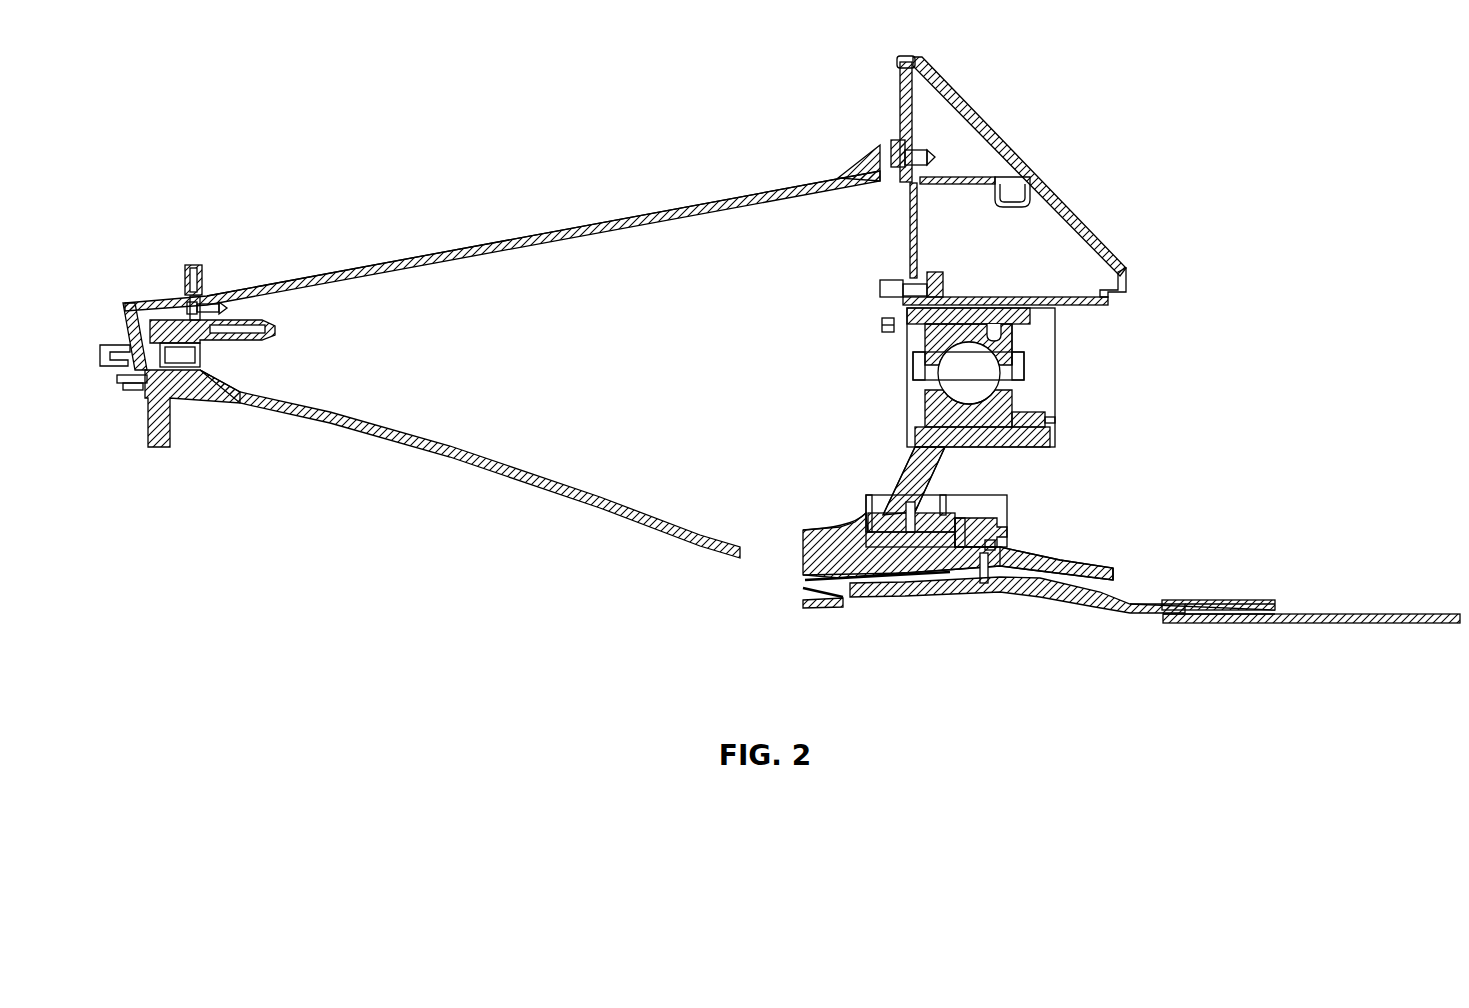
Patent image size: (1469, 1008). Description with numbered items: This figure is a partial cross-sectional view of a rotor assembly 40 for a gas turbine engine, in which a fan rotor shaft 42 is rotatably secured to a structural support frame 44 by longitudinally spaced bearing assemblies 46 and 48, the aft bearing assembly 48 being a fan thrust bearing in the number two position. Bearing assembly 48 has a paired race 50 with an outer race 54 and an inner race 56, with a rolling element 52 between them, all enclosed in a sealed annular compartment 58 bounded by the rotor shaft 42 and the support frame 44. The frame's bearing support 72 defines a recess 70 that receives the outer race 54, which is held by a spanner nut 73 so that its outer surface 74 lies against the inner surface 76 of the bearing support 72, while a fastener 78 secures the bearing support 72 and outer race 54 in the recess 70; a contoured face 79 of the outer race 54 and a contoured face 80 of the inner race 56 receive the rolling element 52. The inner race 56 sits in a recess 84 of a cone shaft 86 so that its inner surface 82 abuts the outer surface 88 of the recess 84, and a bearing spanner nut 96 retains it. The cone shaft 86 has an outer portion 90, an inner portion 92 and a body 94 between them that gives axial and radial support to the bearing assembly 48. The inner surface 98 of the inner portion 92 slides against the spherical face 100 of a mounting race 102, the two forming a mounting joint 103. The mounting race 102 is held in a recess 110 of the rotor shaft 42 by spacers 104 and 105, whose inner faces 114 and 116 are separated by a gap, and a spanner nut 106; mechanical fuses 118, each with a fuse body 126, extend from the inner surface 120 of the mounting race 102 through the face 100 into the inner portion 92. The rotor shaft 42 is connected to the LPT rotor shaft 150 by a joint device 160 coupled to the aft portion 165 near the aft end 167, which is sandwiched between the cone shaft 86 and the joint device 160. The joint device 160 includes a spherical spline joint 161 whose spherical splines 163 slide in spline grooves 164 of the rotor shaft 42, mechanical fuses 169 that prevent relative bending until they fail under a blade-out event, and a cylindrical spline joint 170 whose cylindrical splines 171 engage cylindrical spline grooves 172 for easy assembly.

The rotor assembly 40 is at (415, 148).
The rotor shaft 42 is at (480, 465).
The structural support frame 44 is at (953, 187).
The bearing assembly 46 is at (163, 262).
The bearing assembly 48 is at (792, 365).
The paired race 50 is at (1092, 348).
The rolling element 52 is at (957, 384).
The outer race 54 is at (1033, 345).
The inner race 56 is at (1035, 412).
The sealed annular compartment 58 is at (652, 258).
The recess 70 is at (975, 322).
The bearing support 72 is at (907, 277).
The spanner nut 73 is at (884, 328).
The outer surface 74 is at (1013, 320).
The inner surface 76 is at (988, 316).
The fastener 78 is at (893, 285).
The face 79 is at (900, 298).
The face 80 is at (936, 380).
The inner surface 82 is at (921, 418).
The recess 84 is at (940, 392).
The cone shaft 86 is at (921, 433).
The outer surface 88 is at (1017, 406).
The outer portion 90 is at (1028, 445).
The inner portion 92 is at (957, 518).
The body 94 is at (918, 450).
The bearing spanner nut 96 is at (1048, 424).
The inner surface 98 is at (866, 520).
The face 100 is at (886, 513).
The mounting race 102 is at (928, 578).
The mounting joint 103 is at (757, 460).
The spacer 104 is at (866, 525).
The spacer 105 is at (960, 530).
The spanner nut 106 is at (988, 542).
The recess 110 is at (882, 570).
The inner face 114 is at (877, 540).
The inner face 116 is at (940, 560).
The mechanical fuse 118 is at (916, 512).
The inner surface 120 is at (932, 528).
The fuse body 126 is at (897, 548).
The LPT rotor shaft 150 is at (1390, 612).
The joint device 160 is at (1092, 603).
The spherical spline joint 161 is at (1142, 597).
The spherical spline 163 is at (843, 598).
The spline groove 164 is at (822, 588).
The aft portion 165 is at (1068, 556).
The aft end 167 is at (1113, 568).
The mechanical fuse 169 is at (982, 580).
The cylindrical spline joint 170 is at (1268, 586).
The cylindrical spline 171 is at (1282, 614).
The cylindrical spline groove 172 is at (1192, 598).